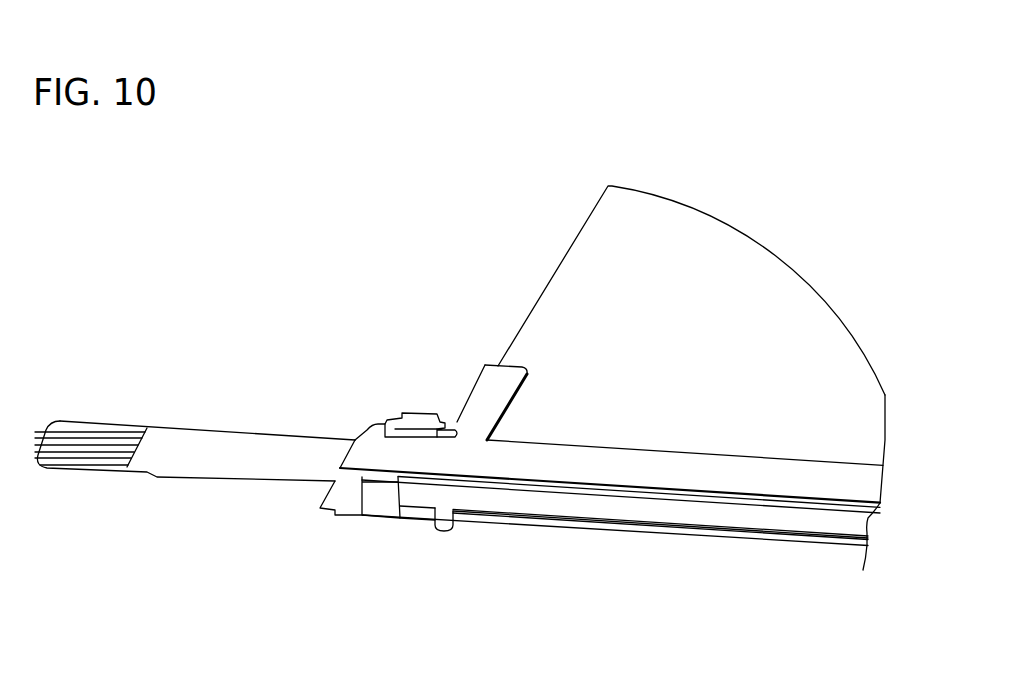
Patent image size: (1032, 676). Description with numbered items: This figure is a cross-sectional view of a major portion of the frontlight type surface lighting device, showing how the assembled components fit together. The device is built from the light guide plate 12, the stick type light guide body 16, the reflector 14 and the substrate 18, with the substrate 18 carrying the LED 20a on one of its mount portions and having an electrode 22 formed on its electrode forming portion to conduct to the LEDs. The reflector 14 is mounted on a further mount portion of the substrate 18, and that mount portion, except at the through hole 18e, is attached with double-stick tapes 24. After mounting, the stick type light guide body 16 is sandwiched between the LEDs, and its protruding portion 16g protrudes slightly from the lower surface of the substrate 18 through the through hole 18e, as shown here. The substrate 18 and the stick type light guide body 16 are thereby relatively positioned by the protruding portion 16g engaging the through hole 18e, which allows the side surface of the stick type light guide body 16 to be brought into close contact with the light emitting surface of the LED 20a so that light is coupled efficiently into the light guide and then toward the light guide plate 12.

The light guide plate 12 is at (570, 313).
The reflector 14 is at (817, 480).
The stick type light guide body 16 is at (625, 508).
The protruding portion 16g is at (417, 522).
The substrate 18 is at (223, 420).
The through hole 18e is at (458, 529).
The LED 20a is at (382, 497).
The electrode 22 is at (90, 453).
The double-stick tapes 24 is at (527, 515).